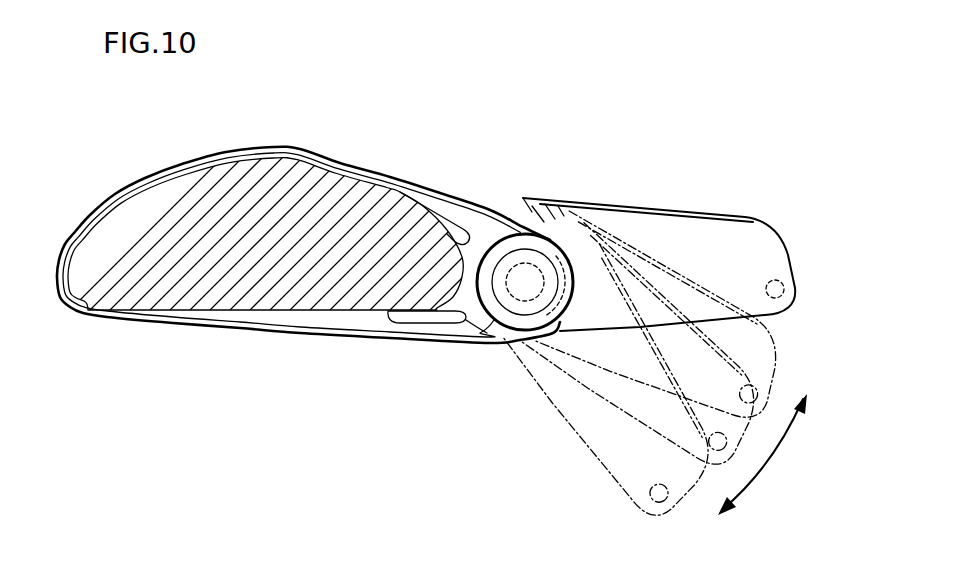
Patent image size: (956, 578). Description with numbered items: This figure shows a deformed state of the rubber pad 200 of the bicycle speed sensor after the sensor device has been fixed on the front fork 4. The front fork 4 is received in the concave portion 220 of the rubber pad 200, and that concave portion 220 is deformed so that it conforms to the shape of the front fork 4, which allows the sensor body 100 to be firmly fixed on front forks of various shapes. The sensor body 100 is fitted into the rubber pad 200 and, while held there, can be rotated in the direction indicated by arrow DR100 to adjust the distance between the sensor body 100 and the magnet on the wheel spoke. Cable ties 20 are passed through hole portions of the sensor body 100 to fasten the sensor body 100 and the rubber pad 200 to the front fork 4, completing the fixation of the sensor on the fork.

The front fork 4 is at (157, 233).
The cable ties 20 is at (260, 147).
The concave portion 220 is at (393, 232).
The rubber pad 200 is at (483, 225).
The sensor body 100 is at (693, 235).
The arrow DR100 is at (772, 462).